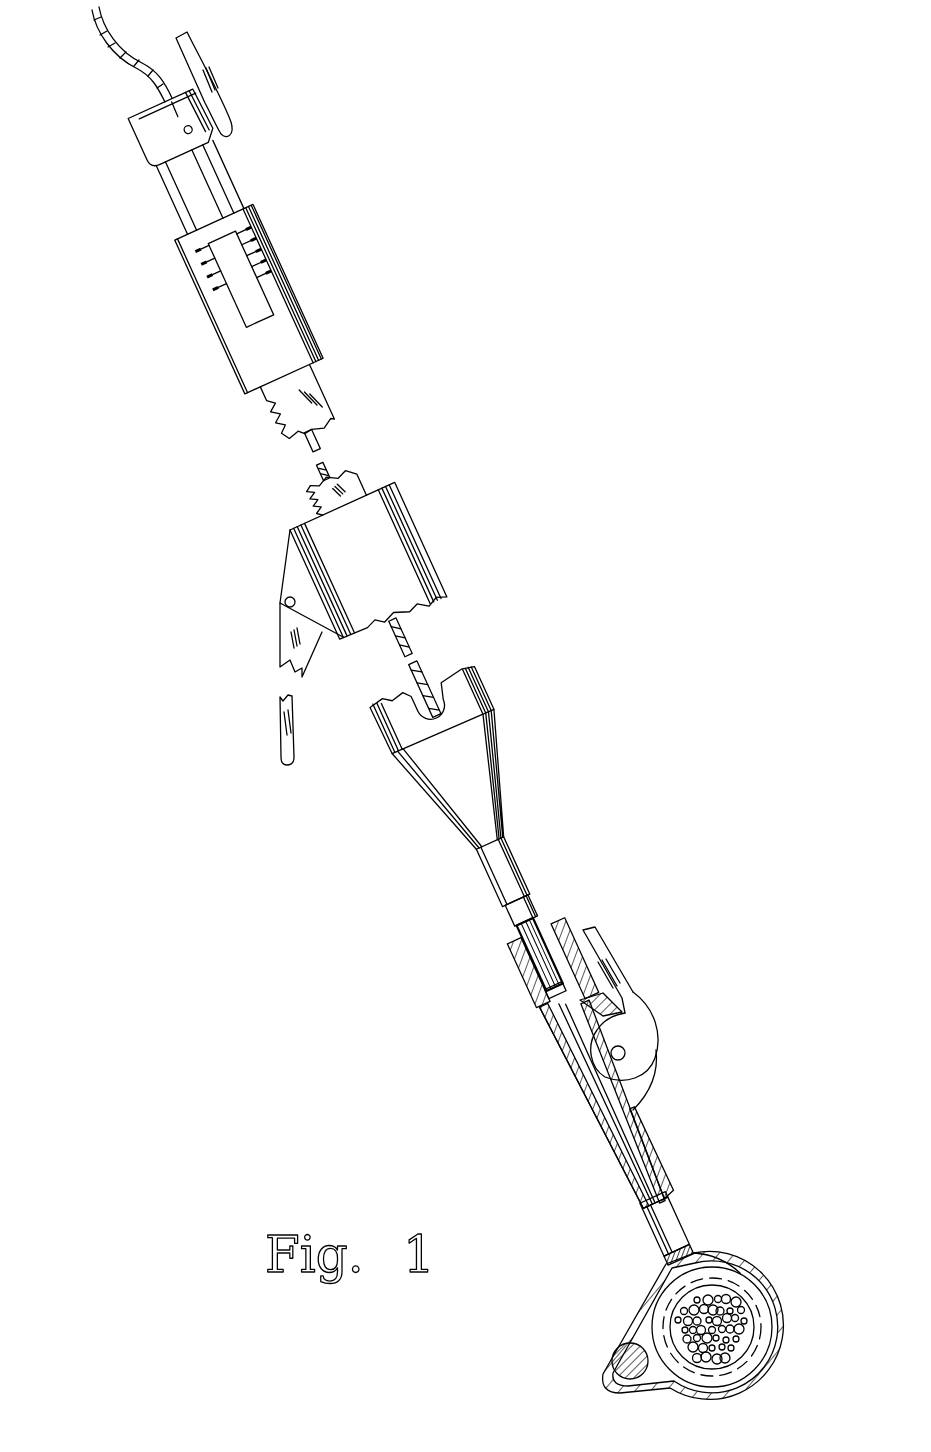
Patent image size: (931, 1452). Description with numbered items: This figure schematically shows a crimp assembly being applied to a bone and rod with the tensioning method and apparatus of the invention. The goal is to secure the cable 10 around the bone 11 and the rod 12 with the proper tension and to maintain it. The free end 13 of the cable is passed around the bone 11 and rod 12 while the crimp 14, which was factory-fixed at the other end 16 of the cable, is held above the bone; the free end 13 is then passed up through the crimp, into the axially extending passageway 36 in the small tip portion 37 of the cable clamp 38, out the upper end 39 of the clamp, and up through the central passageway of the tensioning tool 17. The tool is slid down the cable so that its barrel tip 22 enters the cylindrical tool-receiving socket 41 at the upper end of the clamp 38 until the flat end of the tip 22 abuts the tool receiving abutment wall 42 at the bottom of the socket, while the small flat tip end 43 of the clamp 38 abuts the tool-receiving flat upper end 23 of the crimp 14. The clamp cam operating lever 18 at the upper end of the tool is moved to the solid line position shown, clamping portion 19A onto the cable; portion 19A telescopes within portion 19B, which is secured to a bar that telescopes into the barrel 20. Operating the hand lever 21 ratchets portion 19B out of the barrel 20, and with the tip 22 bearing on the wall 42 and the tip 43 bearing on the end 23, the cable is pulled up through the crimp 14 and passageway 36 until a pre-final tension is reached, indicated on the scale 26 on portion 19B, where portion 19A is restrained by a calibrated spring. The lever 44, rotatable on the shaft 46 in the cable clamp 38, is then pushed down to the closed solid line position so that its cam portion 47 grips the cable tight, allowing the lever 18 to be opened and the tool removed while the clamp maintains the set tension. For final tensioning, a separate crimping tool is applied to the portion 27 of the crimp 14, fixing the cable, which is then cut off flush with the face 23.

The cable 10 is at (633, 1310).
The bone 11 is at (763, 1345).
The rod 12 is at (612, 1381).
The free end of the cable 13 is at (140, 78).
The crimp 14 is at (697, 1221).
The other end of the cable 16 is at (694, 1240).
The tensioning tool 17 is at (552, 860).
The clamp cam operating lever 18 is at (218, 100).
The portion of the tensioning tool 19A is at (200, 174).
The portion of the tensioning tool 19B is at (265, 214).
The barrel 20 is at (388, 546).
The hand lever 21 is at (280, 726).
The barrel tip 22 is at (600, 965).
The upper end of the crimp 23 is at (660, 1198).
The scale 26 is at (270, 292).
The portion of the crimp 27 is at (652, 1236).
The axially extending passageway 36 is at (630, 1185).
The small tip portion 37 is at (642, 1138).
The cable clamp 38 is at (569, 1100).
The upper end of the clamp 39 is at (518, 937).
The cylindrical tool-receiving socket 41 is at (527, 971).
The tool receiving abutment wall 42 is at (550, 1006).
The small flat tip end 43 is at (675, 1208).
The lever 44 is at (637, 1013).
The shaft 46 is at (625, 1057).
The cam portion 47 is at (572, 1072).